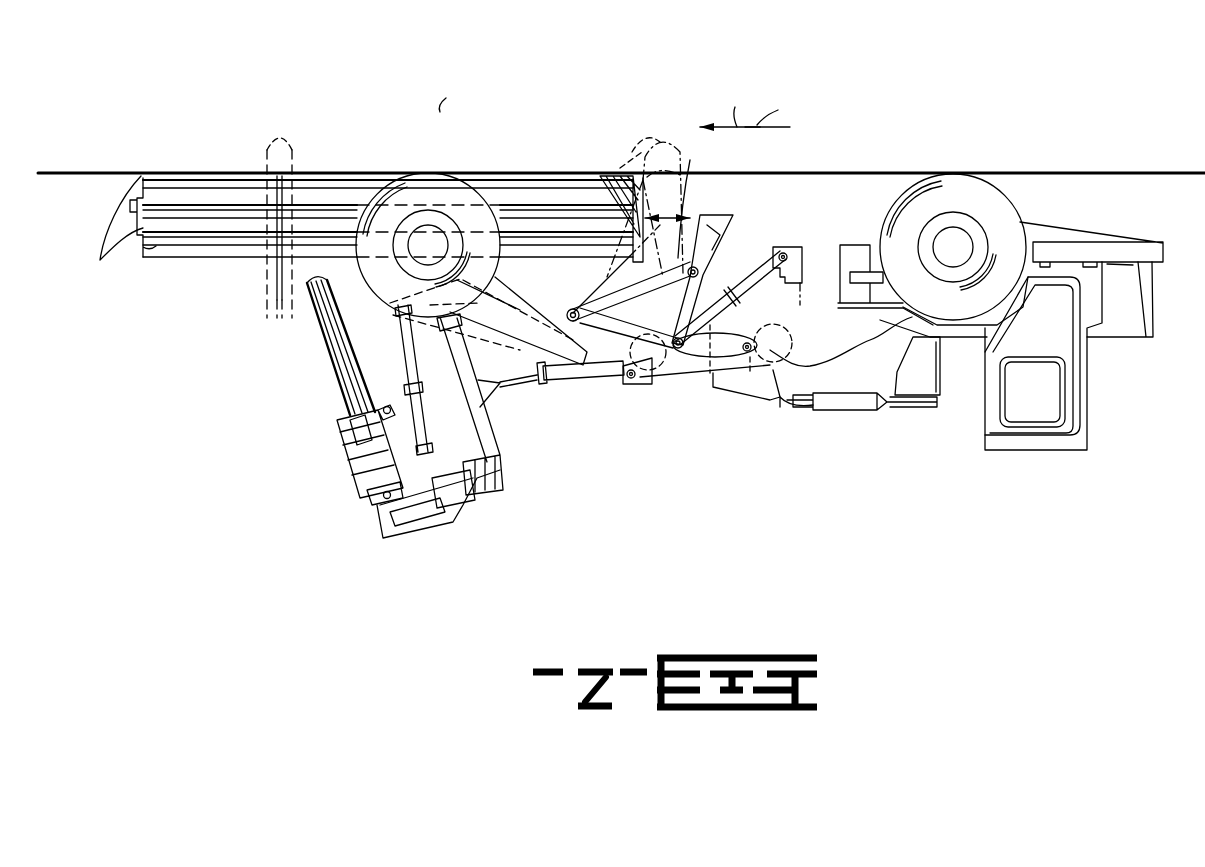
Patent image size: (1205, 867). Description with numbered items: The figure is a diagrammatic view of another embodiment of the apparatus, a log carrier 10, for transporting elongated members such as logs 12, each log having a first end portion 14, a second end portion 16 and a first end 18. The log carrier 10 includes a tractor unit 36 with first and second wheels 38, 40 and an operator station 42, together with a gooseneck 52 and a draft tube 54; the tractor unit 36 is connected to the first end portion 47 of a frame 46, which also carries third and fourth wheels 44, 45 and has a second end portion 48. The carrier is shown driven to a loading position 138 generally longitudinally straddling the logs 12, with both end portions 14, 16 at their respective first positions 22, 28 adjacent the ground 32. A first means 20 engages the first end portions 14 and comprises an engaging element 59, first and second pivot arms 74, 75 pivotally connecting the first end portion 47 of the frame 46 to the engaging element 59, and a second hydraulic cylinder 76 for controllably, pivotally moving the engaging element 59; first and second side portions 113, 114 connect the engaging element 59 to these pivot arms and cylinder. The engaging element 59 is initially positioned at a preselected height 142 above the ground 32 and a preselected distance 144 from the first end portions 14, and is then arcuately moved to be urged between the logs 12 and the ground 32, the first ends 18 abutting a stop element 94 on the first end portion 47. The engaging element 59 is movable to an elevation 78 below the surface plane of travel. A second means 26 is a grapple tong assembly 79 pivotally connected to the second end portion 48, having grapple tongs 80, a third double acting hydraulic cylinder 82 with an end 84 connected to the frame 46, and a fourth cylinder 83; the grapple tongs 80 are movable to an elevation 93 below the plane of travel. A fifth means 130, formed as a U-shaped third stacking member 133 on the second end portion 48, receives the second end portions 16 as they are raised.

The log carrier 10 is at (518, 568).
The log 12 is at (101, 226).
The first end portion 14 is at (563, 120).
The second end portion 16 is at (198, 150).
The first end 18 is at (614, 208).
The first means 20 is at (768, 197).
The first position 22 is at (583, 108).
The second means 26 is at (258, 508).
The first position 28 is at (229, 147).
The ground 32 is at (448, 70).
The tractor unit 36 is at (965, 465).
The first wheel 38 is at (950, 185).
The second wheel 40 is at (953, 247).
The operator station 42 is at (1055, 373).
The third wheel 44 is at (400, 195).
The fourth wheel 45 is at (428, 245).
The frame 46 is at (695, 363).
The first end portion 47 is at (746, 401).
The second end portion 48 is at (522, 405).
The gooseneck 52 is at (860, 380).
The draft tube 54 is at (798, 318).
The engaging element 59 is at (700, 202).
The first pivot arm 74 is at (658, 334).
The second pivot arm 75 is at (618, 312).
The second hydraulic cylinder 76 is at (799, 320).
The elevation 78 is at (660, 137).
The grapple tong assembly 79 is at (350, 545).
The grapple tongs 80 is at (333, 370).
The third double acting hydraulic cylinder 82 is at (603, 380).
The fourth cylinder 83 is at (405, 345).
The end 84 is at (643, 403).
The elevation 93 is at (290, 135).
The stop element 94 is at (812, 267).
The first side portion 113 is at (718, 258).
The second side portion 114 is at (684, 358).
The fifth means 130 is at (546, 334).
The third stacking member 133 is at (520, 292).
The loading position 138 is at (757, 84).
The preselected height 142 is at (743, 208).
The preselected distance 144 is at (683, 195).